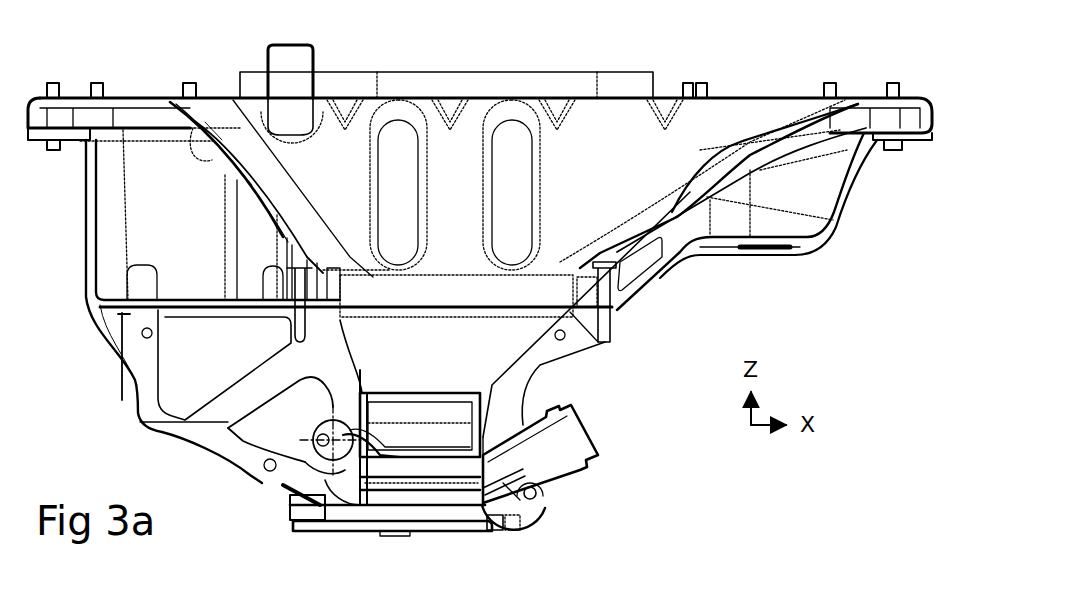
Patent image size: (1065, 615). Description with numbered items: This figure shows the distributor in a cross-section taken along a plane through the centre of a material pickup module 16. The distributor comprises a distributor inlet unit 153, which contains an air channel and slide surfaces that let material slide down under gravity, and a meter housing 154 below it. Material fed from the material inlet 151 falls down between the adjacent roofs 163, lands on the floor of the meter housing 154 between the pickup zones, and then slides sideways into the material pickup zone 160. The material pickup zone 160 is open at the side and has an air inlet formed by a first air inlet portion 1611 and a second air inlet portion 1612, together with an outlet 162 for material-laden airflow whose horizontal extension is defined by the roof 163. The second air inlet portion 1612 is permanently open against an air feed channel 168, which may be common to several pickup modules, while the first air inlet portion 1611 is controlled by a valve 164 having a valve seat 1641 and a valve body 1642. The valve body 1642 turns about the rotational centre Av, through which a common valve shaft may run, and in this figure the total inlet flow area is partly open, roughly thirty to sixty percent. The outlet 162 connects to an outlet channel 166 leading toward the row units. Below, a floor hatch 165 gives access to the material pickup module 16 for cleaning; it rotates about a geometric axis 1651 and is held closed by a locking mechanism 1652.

The material pickup module 16 is at (684, 509).
The material inlet 151 is at (483, 345).
The distributor inlet unit 153 is at (123, 75).
The meter housing 154 is at (135, 447).
The material pickup zone 160 is at (427, 511).
The first air inlet portion 1611 is at (373, 507).
The second air inlet portion 1612 is at (337, 490).
The outlet 162 is at (505, 488).
The roof 163 is at (463, 443).
The valve 164 is at (297, 405).
The valve seat 1641 is at (318, 440).
The valve body 1642 is at (320, 464).
The floor hatch 165 is at (463, 537).
The geometric axis 1651 is at (541, 501).
The locking mechanism 1652 is at (293, 527).
The outlet channel 166 is at (592, 433).
The air feed channel 168 is at (227, 428).
The rotational centre Av is at (316, 457).